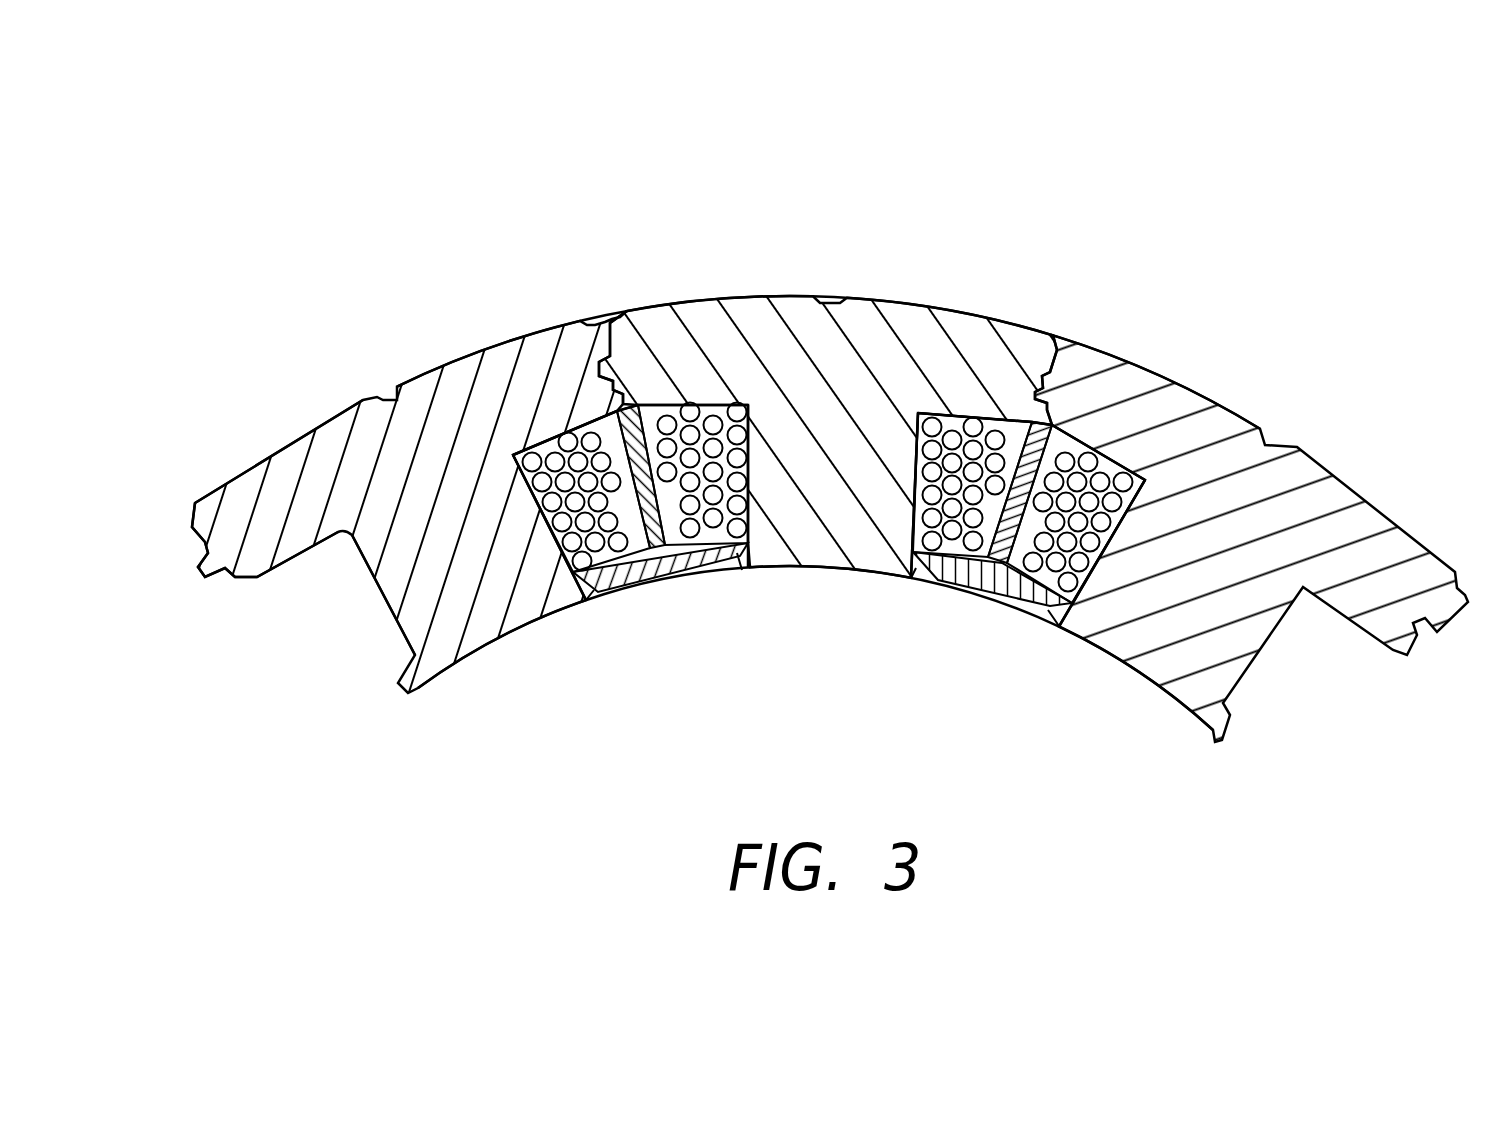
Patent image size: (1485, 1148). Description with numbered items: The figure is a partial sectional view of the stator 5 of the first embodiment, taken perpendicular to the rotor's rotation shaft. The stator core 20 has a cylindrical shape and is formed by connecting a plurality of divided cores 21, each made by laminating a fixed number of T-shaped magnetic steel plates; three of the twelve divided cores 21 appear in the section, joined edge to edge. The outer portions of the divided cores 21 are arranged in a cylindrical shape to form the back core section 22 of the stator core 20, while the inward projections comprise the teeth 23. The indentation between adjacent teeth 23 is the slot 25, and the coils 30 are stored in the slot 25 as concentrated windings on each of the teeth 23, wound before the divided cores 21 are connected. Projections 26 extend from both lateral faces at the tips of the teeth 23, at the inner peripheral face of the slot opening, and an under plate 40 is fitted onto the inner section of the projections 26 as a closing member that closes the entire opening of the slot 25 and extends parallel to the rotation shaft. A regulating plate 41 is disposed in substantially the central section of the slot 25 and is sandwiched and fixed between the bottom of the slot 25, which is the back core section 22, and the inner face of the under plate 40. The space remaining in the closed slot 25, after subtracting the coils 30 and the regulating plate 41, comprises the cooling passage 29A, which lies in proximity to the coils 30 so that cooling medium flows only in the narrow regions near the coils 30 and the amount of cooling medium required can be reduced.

The stator 5 is at (963, 290).
The stator core 20 is at (798, 297).
The divided core 21 is at (427, 370).
The back core section 22 is at (323, 480).
The teeth 23 is at (485, 615).
The slot 25 is at (703, 413).
The projections 26 is at (598, 592).
The cooling passage 29A is at (567, 433).
The coils 30 is at (590, 435).
The under plate 40 is at (650, 578).
The regulating plate 41 is at (630, 413).